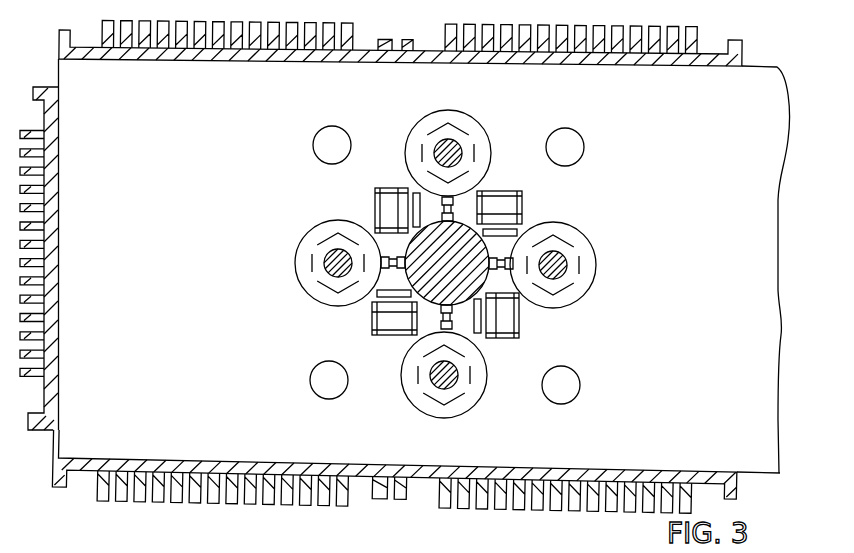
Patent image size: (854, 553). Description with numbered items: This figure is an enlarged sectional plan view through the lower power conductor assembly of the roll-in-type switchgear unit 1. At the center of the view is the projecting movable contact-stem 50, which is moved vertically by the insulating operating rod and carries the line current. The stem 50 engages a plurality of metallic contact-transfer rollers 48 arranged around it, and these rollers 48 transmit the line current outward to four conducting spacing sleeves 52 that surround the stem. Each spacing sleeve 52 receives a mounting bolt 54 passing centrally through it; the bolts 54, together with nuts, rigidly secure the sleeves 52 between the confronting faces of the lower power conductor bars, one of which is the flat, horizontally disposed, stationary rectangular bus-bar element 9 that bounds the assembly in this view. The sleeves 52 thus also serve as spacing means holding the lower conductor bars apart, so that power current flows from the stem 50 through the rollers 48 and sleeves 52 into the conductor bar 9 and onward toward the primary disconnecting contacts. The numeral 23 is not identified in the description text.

The roll-in-type switchgear unit 1 is at (827, 232).
The bus-bar element 9 is at (165, 438).
The hexagonal nut 23 is at (347, 228).
The metallic contact-transfer rollers 48 is at (541, 228).
The movable contact-stem 50 is at (463, 290).
The conducting spacing sleeves 52 is at (423, 120).
The mounting bolts 54 is at (458, 143).